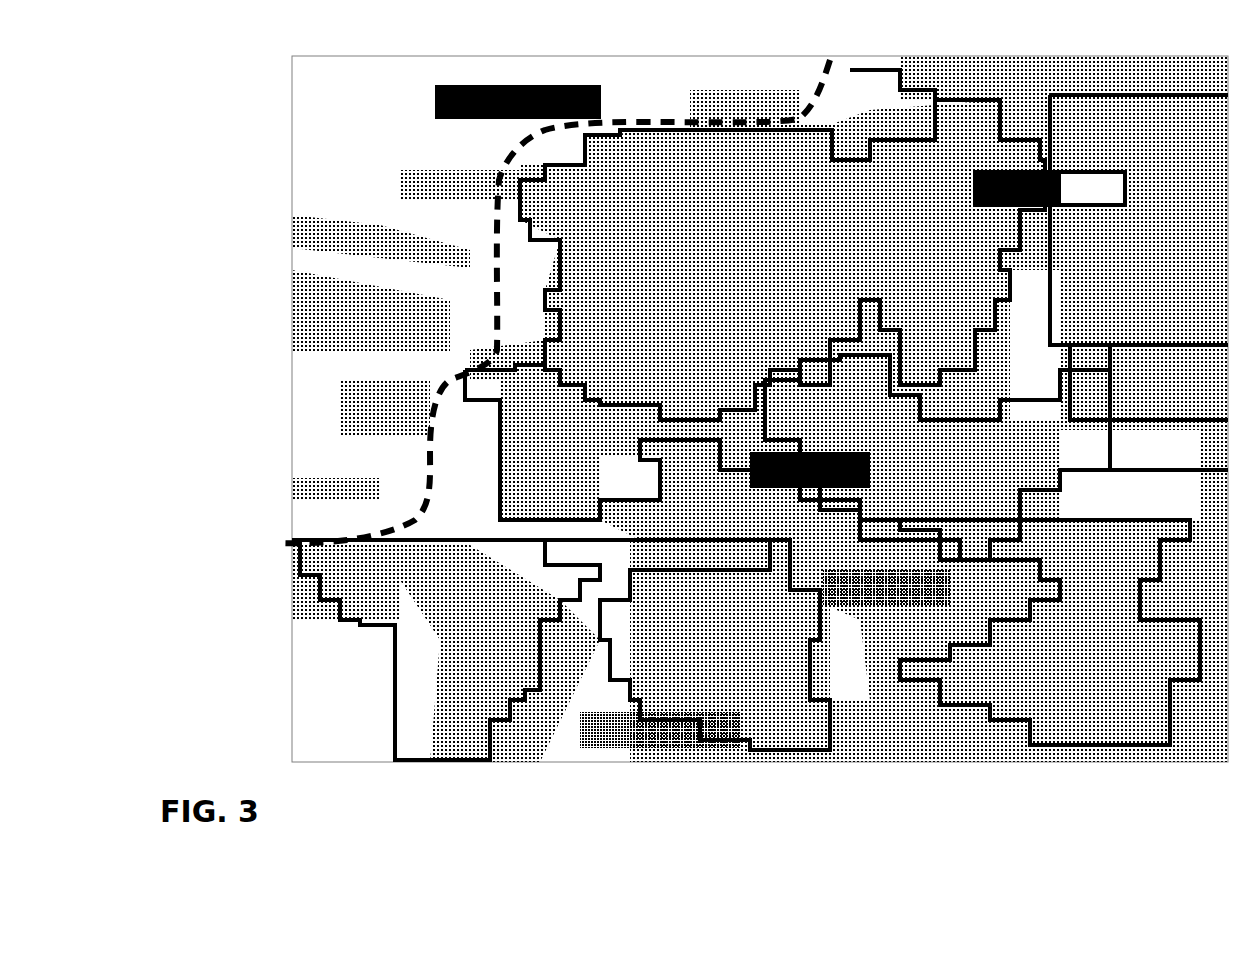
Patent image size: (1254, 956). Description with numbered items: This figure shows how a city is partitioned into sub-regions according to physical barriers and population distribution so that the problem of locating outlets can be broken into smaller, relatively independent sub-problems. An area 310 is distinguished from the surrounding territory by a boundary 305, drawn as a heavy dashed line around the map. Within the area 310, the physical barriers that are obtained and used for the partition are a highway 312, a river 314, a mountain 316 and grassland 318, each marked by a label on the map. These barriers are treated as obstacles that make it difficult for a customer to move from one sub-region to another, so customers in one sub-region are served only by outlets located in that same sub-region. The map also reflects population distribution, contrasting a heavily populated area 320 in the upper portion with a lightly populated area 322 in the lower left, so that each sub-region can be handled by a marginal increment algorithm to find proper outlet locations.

The area 310 is at (346, 57).
The boundary 305 is at (572, 85).
The highway 312 is at (750, 470).
The river 314 is at (1015, 170).
The mountain 316 is at (905, 612).
The grassland 318 is at (682, 750).
The heavily populated area 320 is at (752, 205).
The lightly populated area 322 is at (428, 660).